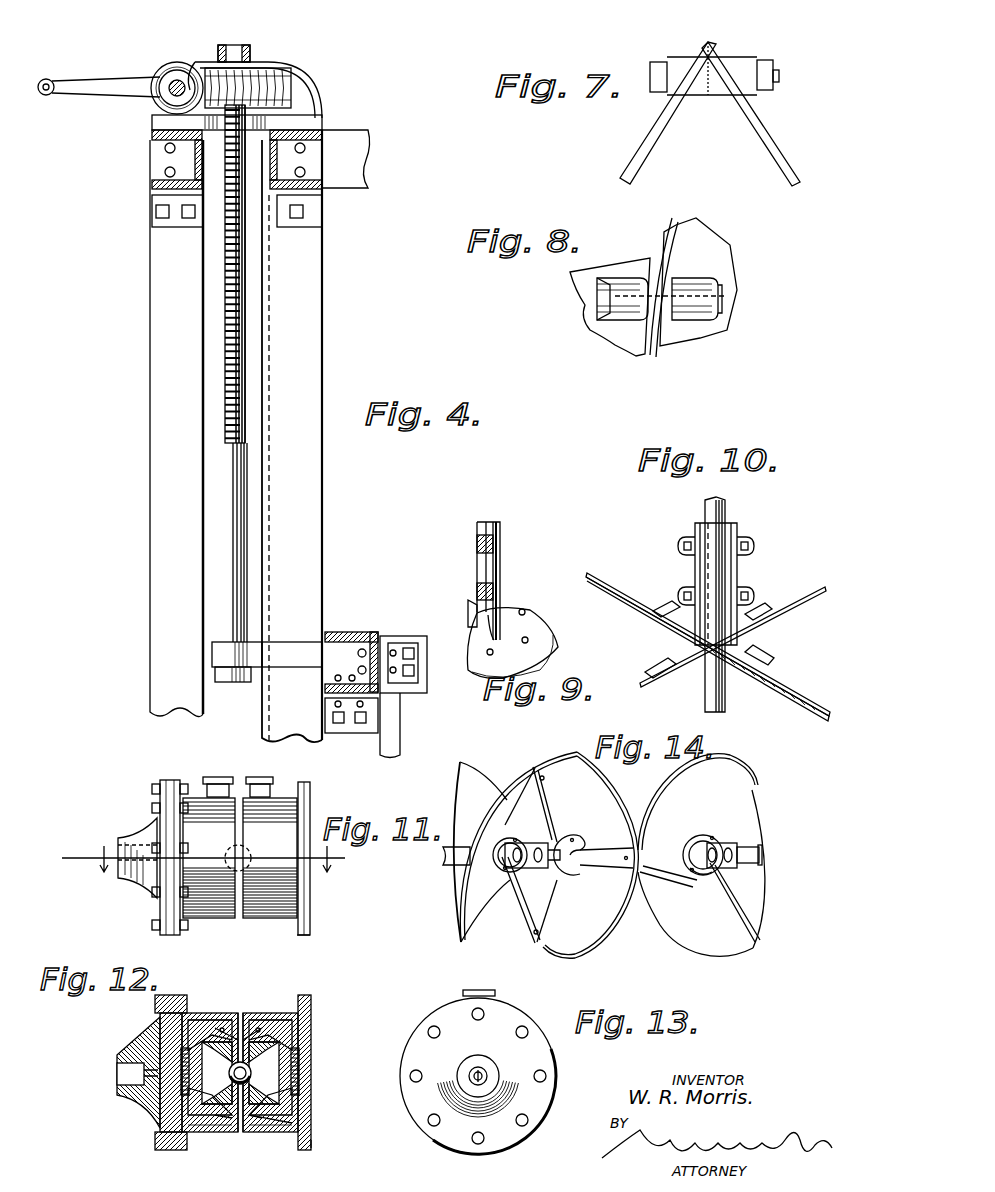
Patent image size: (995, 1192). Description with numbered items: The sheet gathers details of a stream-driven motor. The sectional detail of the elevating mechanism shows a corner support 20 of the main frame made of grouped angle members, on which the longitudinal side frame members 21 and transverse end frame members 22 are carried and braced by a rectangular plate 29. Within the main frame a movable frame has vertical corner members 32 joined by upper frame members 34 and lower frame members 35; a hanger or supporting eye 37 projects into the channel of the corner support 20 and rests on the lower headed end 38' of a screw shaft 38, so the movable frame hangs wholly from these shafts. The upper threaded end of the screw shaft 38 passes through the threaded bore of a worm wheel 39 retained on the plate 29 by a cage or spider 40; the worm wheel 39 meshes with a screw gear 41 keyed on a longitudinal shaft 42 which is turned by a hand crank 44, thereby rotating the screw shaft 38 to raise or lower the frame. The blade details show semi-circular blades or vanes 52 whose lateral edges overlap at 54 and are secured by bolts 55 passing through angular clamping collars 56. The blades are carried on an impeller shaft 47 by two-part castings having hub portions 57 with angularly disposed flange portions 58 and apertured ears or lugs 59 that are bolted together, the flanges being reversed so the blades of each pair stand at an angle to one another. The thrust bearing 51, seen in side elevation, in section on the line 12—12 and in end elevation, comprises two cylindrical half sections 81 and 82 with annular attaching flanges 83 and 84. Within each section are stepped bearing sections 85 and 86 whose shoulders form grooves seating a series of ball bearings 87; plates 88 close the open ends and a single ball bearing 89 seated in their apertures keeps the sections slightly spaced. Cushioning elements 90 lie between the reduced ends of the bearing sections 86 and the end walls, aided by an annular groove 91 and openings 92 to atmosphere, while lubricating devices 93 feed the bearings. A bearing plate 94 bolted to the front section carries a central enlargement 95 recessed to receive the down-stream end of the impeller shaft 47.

In FIG. 11, the section line 12— 12 is at (212, 854).
In FIG. 4, the corner supports 20 is at (158, 548).
In FIG. 4, the longitudinal side frame members 21 is at (160, 163).
In FIG. 4, the transverse end frame members 22 is at (358, 155).
In FIG. 4, the rectangular plates 29 is at (310, 127).
In FIG. 4, the vertical end or corner members 32 is at (388, 750).
In FIG. 4, the upper end and side frame members 34 is at (352, 622).
In FIG. 4, the lower end and side frame members 35 is at (396, 634).
In FIG. 4, the hangers or supporting eyes 37 is at (218, 656).
In FIG. 4, the screw shafts 38 is at (174, 373).
In FIG. 4, the lower headed ends 38' is at (229, 700).
In FIG. 4, the worm wheel 39 is at (272, 75).
In FIG. 4, the cage or spider 40 is at (306, 98).
In FIG. 4, the screw elements or gears 41 is at (165, 101).
In FIG. 4, the longitudinally extending shafts 42 is at (170, 82).
In FIG. 4, the hand cranks 44 is at (70, 82).
In FIG. 14, the impeller shaft 47 is at (457, 855).
In FIG. 11, the thrust bearing 51 is at (323, 917).
In FIG. 12, the thrust bearing 51 is at (332, 1146).
In FIG. 13, the thrust bearing 51 is at (478, 1087).
In FIG. 8, the blades or vanes 52 is at (708, 258).
In FIG. 10, the blades or vanes 52 is at (605, 585).
In FIG. 14, the blades or vanes 52 is at (742, 770).
In FIG. 8, the overlap 54 is at (657, 346).
In FIG. 14, the overlap 54 is at (533, 766).
In FIG. 7, the bolts 55 is at (655, 88).
In FIG. 8, the bolts 55 is at (725, 296).
In FIG. 14, the bolts 55 is at (730, 847).
In FIG. 7, the angular clamping elements or collars 56 is at (672, 58).
In FIG. 8, the angular clamping elements or collars 56 is at (618, 278).
In FIG. 14, the angular clamping elements or collars 56 is at (710, 840).
In FIG. 9, the hub portions 57 is at (500, 580).
In FIG. 10, the hub portions 57 is at (700, 532).
In FIG. 14, the hub portions 57 is at (710, 870).
In FIG. 9, the flange portions 58 is at (540, 633).
In FIG. 10, the flange portions 58 is at (665, 607).
In FIG. 9, the apertured ears or lugs 59 is at (478, 590).
In FIG. 10, the apertured ears or lugs 59 is at (685, 549).
In FIG. 11, the cylindrical half section 81 is at (212, 918).
In FIG. 12, the cylindrical half section 81 is at (228, 1132).
In FIG. 13, the cylindrical half section 81 is at (437, 998).
In FIG. 11, the cylindrical half section 82 is at (272, 918).
In FIG. 12, the cylindrical half section 82 is at (280, 1132).
In FIG. 11, the annular attaching flange 83 is at (170, 870).
In FIG. 12, the annular attaching flange 83 is at (172, 1145).
In FIG. 11, the annular attaching flange 84 is at (305, 935).
In FIG. 12, the annular attaching flange 84 is at (310, 1002).
In FIG. 12, the bearing section 85 is at (165, 1025).
In FIG. 12, the bearing section 86 is at (220, 1025).
In FIG. 12, the ball bearings 87 is at (262, 1012).
In FIG. 12, the plates 88 is at (240, 1012).
In FIG. 11, the single ball bearing 89 is at (240, 850).
In FIG. 12, the single ball bearing 89 is at (250, 1072).
In FIG. 12, the cushioning elements 90 is at (170, 1100).
In FIG. 12, the annular groove 91 is at (300, 1105).
In FIG. 12, the openings 92 is at (300, 1075).
In FIG. 13, the openings 92 is at (485, 1073).
In FIG. 11, the lubricating devices 93 is at (252, 776).
In FIG. 13, the lubricating devices 93 is at (482, 988).
In FIG. 11, the bearing plate 94 is at (138, 885).
In FIG. 12, the bearing plate 94 is at (128, 1045).
In FIG. 13, the bearing plate 94 is at (515, 1023).
In FIG. 12, the central enlargement 95 is at (118, 1073).
In FIG. 13, the central enlargement 95 is at (472, 1078).